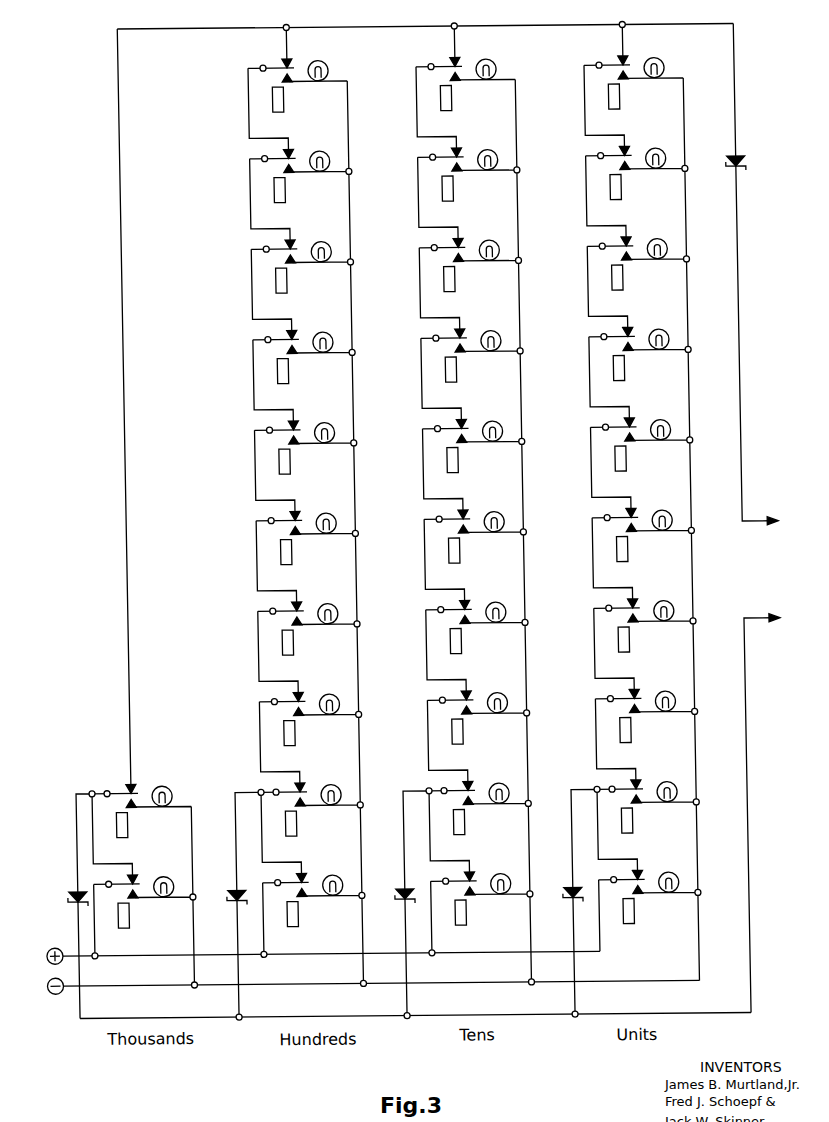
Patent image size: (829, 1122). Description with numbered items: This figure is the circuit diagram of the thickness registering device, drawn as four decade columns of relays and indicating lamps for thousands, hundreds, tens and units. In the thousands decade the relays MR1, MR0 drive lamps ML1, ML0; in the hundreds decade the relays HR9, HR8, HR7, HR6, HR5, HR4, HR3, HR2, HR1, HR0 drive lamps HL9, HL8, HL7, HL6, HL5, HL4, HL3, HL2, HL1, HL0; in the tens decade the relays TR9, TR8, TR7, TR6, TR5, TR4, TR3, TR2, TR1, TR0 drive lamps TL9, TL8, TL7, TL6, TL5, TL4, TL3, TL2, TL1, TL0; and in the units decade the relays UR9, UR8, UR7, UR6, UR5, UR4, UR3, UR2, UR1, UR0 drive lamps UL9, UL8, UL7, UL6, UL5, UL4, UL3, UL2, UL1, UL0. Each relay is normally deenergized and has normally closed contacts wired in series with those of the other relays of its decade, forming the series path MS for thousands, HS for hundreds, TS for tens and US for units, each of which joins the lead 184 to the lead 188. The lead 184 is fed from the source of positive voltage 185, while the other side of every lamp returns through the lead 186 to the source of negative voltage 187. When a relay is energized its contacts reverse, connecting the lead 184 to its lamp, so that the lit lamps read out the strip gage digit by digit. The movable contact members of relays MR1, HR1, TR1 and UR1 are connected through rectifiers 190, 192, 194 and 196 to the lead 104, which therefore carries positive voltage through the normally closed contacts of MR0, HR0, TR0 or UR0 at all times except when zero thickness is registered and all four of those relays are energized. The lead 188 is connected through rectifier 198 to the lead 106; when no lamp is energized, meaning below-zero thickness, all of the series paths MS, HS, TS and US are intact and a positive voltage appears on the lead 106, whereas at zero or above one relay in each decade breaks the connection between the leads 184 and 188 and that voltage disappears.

The lead 188 is at (372, 28).
The lead 184 is at (287, 954).
The lead 186 is at (296, 984).
The source of positive voltage 185 is at (45, 936).
The source of negative voltage 187 is at (40, 992).
The rectifier 190 is at (54, 896).
The rectifier 192 is at (218, 889).
The rectifier 194 is at (386, 889).
The rectifier 196 is at (554, 889).
The rectifier 198 is at (740, 176).
The lead 106 is at (734, 470).
The lead 104 is at (755, 680).
The series path MS is at (110, 523).
The series path HS is at (292, 522).
The series path TS is at (459, 520).
The series path US is at (624, 519).
The indicating lamp ML1 is at (158, 788).
The indicating lamp ML0 is at (160, 879).
The relay MR1 is at (140, 824).
The relay MR0 is at (142, 915).
The indicating lamp HL9 is at (315, 63).
The indicating lamp HL8 is at (317, 153).
The indicating lamp HL7 is at (318, 244).
The indicating lamp HL6 is at (320, 334).
The indicating lamp HL5 is at (321, 425).
The indicating lamp HL4 is at (323, 515).
The indicating lamp HL3 is at (325, 606).
The indicating lamp HL2 is at (326, 696).
The indicating lamp HL1 is at (328, 787).
The indicating lamp HL0 is at (330, 877).
The relay HR9 is at (296, 99).
The relay HR8 is at (298, 189).
The relay HR7 is at (300, 280).
The relay HR6 is at (301, 370).
The relay HR5 is at (303, 461).
The relay HR4 is at (304, 551).
The relay HR3 is at (306, 642).
The relay HR2 is at (308, 732).
The relay HR1 is at (309, 823).
The relay HR0 is at (311, 913).
The indicating lamp TL9 is at (482, 61).
The indicating lamp TL8 is at (484, 152).
The indicating lamp TL7 is at (485, 242).
The indicating lamp TL6 is at (487, 333).
The indicating lamp TL5 is at (488, 423).
The indicating lamp TL4 is at (490, 514).
The indicating lamp TL3 is at (492, 604).
The indicating lamp TL2 is at (493, 695).
The indicating lamp TL1 is at (495, 785).
The indicating lamp TL0 is at (497, 876).
The relay TR9 is at (463, 97).
The relay TR8 is at (465, 188).
The relay TR7 is at (467, 278).
The relay TR6 is at (468, 369).
The relay TR5 is at (470, 459).
The relay TR4 is at (471, 550).
The relay TR3 is at (473, 640).
The relay TR2 is at (475, 731).
The relay TR1 is at (476, 821).
The relay TR0 is at (478, 912).
The indicating lamp UL9 is at (651, 60).
The indicating lamp UL8 is at (653, 150).
The indicating lamp UL7 is at (654, 241).
The indicating lamp UL6 is at (656, 331).
The indicating lamp UL5 is at (658, 422).
The indicating lamp UL4 is at (659, 512).
The indicating lamp UL3 is at (661, 603).
The indicating lamp UL2 is at (663, 693).
The indicating lamp UL1 is at (664, 784).
The indicating lamp UL0 is at (666, 874).
The relay UR9 is at (631, 96).
The relay UR8 is at (633, 186).
The relay UR7 is at (635, 277).
The relay UR6 is at (636, 367).
The relay UR5 is at (638, 458).
The relay UR4 is at (639, 548).
The relay UR3 is at (641, 639).
The relay UR2 is at (643, 729).
The relay UR1 is at (644, 820).
The relay UR0 is at (646, 910).